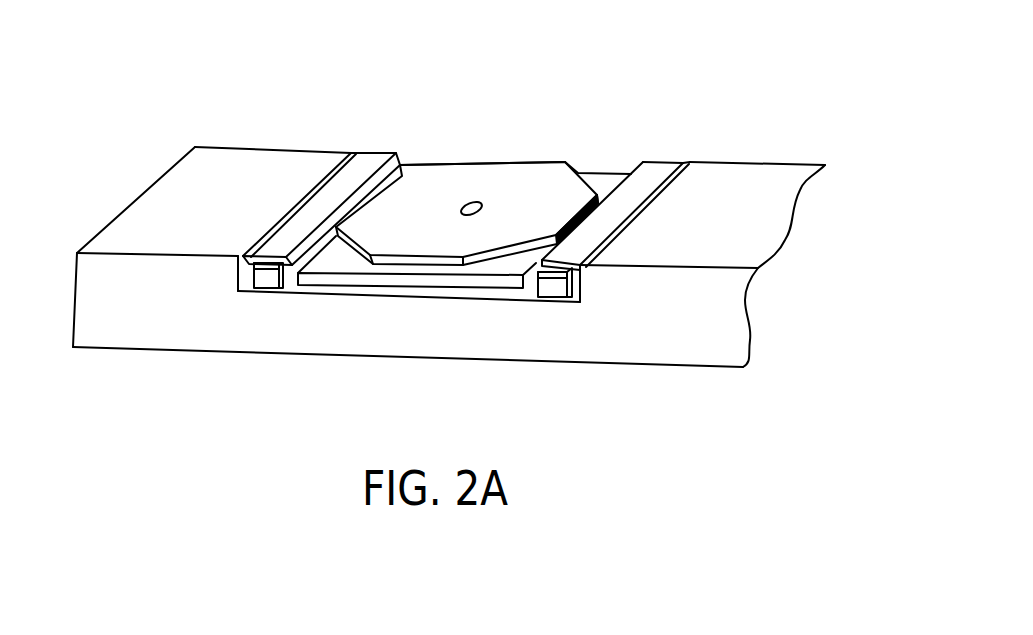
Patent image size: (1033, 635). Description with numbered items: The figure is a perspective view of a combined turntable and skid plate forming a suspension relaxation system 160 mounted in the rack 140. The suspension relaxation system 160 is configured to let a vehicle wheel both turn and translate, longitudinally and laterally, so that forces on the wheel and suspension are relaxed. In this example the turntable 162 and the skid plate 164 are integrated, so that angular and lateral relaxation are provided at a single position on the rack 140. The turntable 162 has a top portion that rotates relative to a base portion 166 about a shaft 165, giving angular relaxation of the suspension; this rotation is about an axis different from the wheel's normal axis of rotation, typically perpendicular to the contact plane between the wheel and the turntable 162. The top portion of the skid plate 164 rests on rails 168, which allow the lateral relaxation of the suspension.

The suspension relaxation system 160 is at (632, 72).
The rack 140 is at (262, 167).
The turntable 162 is at (477, 173).
The skid plate 164 is at (657, 170).
The shaft 165 is at (483, 203).
The base portion 166 is at (478, 284).
The rails 168 is at (558, 292).